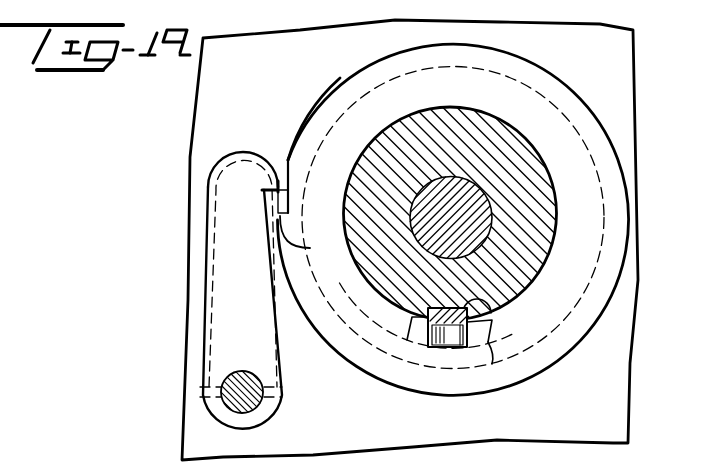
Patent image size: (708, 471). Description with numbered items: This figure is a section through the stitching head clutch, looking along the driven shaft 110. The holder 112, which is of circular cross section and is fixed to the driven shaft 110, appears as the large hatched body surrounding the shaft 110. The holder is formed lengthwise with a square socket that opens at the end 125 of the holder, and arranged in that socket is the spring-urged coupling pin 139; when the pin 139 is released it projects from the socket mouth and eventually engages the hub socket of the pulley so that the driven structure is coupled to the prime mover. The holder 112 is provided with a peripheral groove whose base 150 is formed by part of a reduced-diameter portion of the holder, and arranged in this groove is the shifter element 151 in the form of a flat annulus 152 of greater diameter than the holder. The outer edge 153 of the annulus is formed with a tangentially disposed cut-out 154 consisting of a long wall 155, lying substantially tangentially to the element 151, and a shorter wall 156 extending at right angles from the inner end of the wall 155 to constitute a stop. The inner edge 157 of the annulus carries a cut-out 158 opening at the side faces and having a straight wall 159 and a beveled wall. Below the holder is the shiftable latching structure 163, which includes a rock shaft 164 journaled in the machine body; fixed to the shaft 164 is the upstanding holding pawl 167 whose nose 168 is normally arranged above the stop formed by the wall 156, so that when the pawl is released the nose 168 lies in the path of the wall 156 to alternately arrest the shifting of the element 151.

The driven shaft 110 is at (473, 207).
The holder 112 is at (462, 128).
The end of the holder 125 is at (492, 364).
The coupling pin 139 is at (438, 347).
The base of the groove 150 is at (516, 306).
The shifter element 151 is at (568, 117).
The flat annulus 152 is at (347, 98).
The outer edge 153 is at (306, 118).
The tangentially disposed cut-out 154 is at (282, 164).
The wall 155 is at (291, 185).
The wall 156 is at (313, 232).
The inner edge 157 is at (400, 276).
The cut-out 158 is at (415, 347).
The straight wall 159 is at (477, 346).
The shiftable latching structure 163 is at (218, 308).
The rock shaft 164 is at (250, 390).
The holding pawl 167 is at (217, 350).
The nose 168 is at (272, 176).